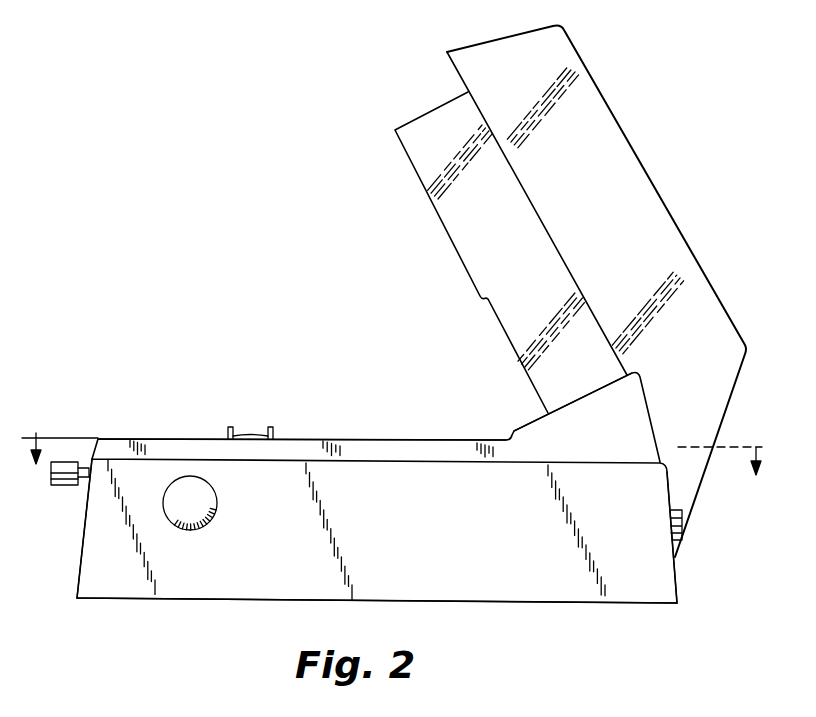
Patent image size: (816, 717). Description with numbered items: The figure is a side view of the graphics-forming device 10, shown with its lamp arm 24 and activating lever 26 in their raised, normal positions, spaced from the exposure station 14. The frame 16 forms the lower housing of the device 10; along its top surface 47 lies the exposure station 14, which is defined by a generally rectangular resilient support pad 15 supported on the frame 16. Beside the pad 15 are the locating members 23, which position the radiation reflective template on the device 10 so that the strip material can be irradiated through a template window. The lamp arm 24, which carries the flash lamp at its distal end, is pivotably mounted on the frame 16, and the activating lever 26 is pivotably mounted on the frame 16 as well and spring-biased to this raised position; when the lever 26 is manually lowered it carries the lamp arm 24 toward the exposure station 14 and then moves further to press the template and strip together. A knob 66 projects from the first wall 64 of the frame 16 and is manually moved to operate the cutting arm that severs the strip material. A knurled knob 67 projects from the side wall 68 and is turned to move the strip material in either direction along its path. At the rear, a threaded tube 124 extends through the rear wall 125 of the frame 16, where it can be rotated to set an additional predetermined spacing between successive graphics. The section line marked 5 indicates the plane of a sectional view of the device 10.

The device 10 is at (121, 605).
The exposure station 14 is at (258, 404).
The resilient support pad 15 is at (252, 433).
The frame 16 is at (155, 445).
The locating members 23 is at (228, 430).
The lamp arm 24 is at (422, 133).
The activating lever 26 is at (640, 162).
The top surface 47 is at (387, 438).
The first wall 64 is at (78, 548).
The knob 66 is at (62, 486).
The knurled knob 67 is at (192, 527).
The side wall 68 is at (257, 582).
The tube 124 is at (685, 527).
The rear wall 125 is at (675, 580).
The section line 5- 5 is at (395, 432).